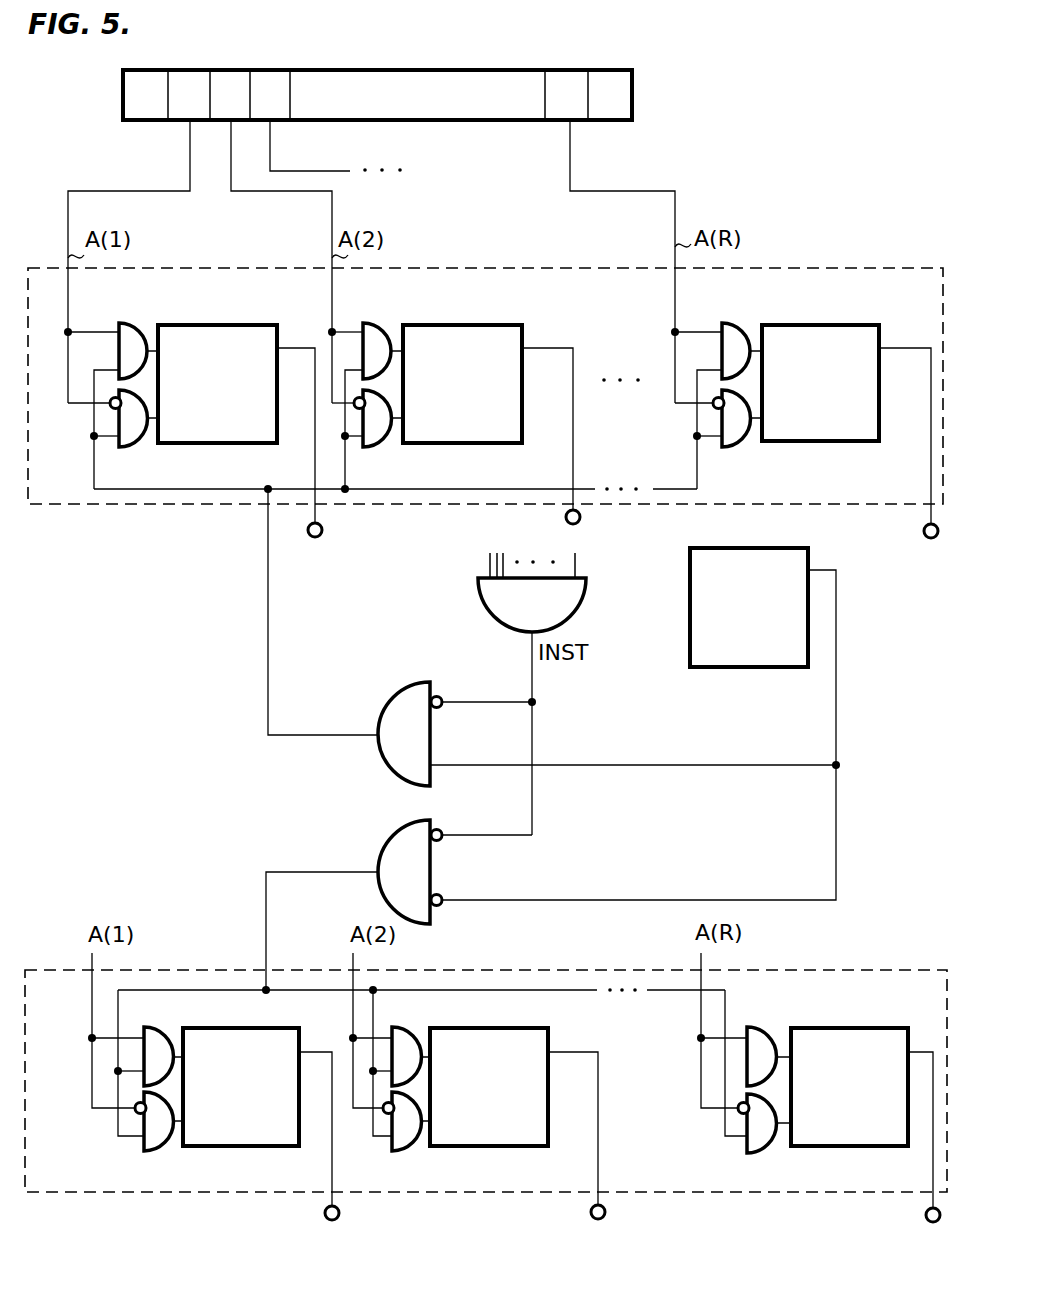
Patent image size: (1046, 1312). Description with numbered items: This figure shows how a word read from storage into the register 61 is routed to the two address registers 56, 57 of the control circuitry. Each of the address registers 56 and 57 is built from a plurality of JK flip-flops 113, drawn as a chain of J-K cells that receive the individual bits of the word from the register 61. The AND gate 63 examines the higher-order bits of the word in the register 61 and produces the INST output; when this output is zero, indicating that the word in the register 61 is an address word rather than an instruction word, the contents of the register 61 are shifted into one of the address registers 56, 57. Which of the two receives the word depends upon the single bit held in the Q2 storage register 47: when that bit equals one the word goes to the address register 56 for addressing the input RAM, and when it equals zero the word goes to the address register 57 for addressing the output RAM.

The register 61 is at (414, 107).
The address register 56 is at (405, 268).
The address register 57 is at (478, 968).
The JK flip-flop 113 is at (196, 397).
The AND gate 63 is at (519, 615).
The Q2 storage register 47 is at (736, 617).